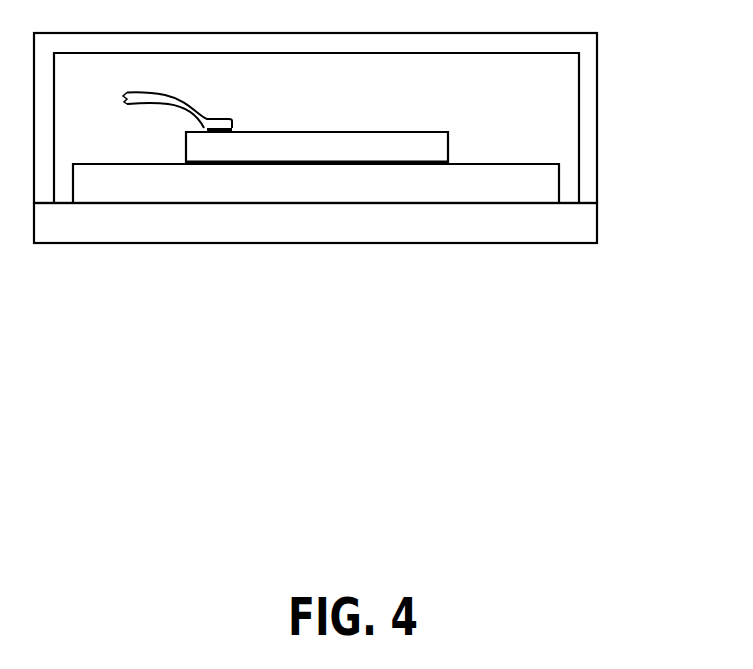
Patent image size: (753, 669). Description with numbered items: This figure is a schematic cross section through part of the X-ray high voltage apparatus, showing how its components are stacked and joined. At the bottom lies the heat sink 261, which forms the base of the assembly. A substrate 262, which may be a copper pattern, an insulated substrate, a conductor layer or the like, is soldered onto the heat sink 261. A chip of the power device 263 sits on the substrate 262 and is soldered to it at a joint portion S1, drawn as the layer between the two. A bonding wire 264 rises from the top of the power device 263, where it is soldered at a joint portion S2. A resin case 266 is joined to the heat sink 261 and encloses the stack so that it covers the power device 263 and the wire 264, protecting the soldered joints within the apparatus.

The heat sink 261 is at (598, 227).
The substrate 262 is at (560, 183).
The power device 263 is at (449, 143).
The bonding wire 264 is at (205, 119).
The resin case 266 is at (598, 65).
The joint portion S1 is at (317, 165).
The joint portion S2 is at (217, 132).